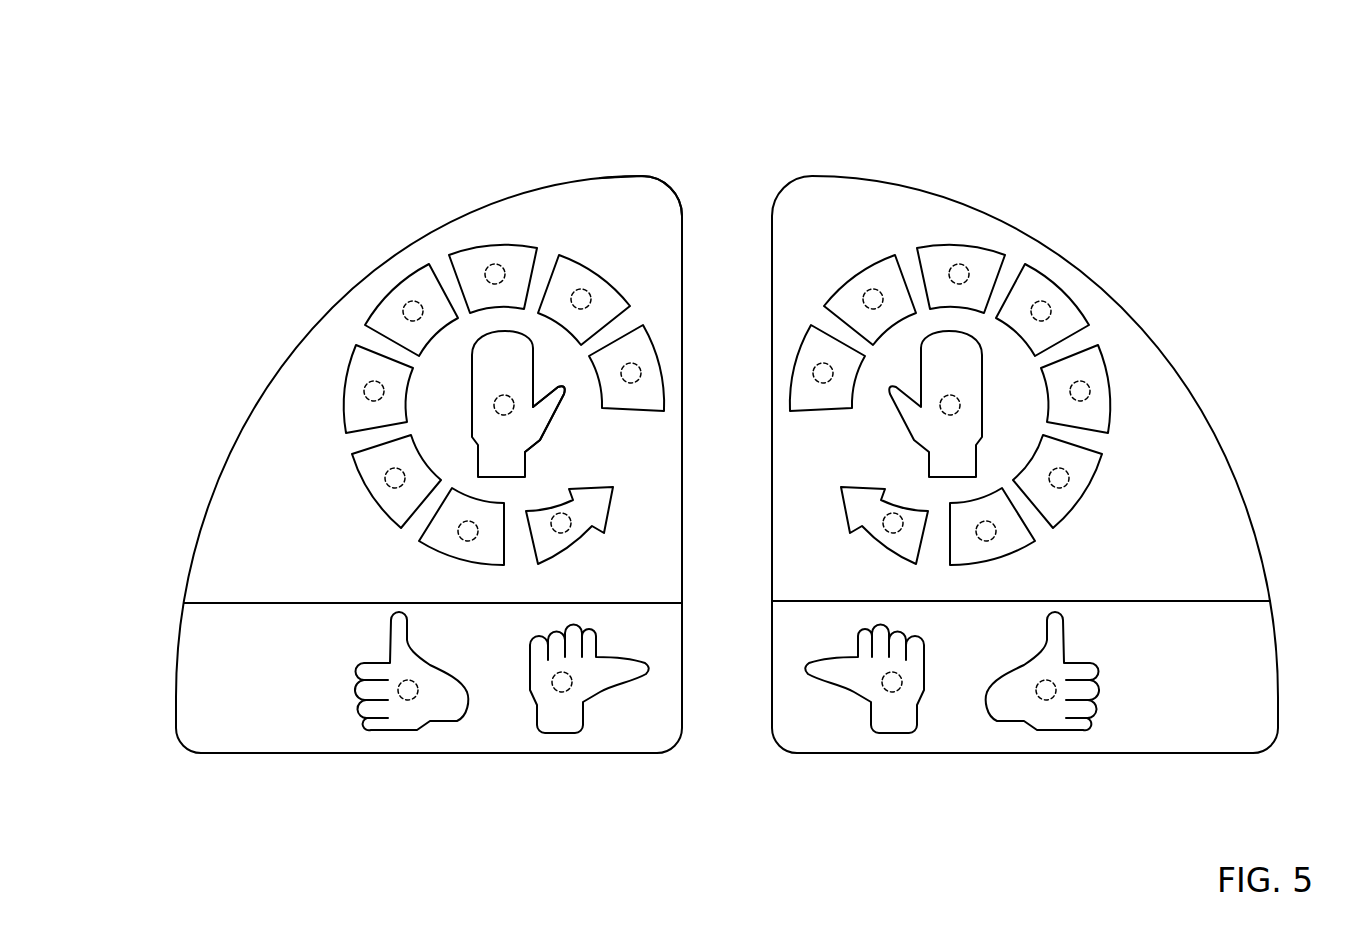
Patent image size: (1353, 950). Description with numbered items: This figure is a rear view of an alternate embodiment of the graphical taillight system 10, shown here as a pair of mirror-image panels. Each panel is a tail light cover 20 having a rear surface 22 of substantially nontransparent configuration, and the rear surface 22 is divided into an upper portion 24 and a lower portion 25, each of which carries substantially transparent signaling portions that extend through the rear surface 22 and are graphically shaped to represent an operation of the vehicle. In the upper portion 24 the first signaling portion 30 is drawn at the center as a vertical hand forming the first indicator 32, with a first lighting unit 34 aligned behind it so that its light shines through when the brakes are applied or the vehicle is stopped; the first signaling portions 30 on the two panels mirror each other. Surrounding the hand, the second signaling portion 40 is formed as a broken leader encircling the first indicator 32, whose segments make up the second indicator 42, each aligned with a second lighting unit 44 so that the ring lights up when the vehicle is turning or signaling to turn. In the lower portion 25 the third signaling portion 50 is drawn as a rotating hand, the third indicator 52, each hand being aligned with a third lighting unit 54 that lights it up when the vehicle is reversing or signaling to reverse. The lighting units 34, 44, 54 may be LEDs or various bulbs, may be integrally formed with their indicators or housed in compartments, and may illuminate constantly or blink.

The graphical taillight system 10 is at (268, 150).
The tail light cover 20 is at (530, 191).
The rear surface 22 is at (645, 205).
The upper portion 24 is at (672, 546).
The lower portion 25 is at (647, 622).
The first signaling portion 30 is at (820, 350).
The first indicator 32 is at (560, 412).
The first lighting unit 34 is at (512, 397).
The second signaling portion 40 is at (708, 364).
The second indicator 42 is at (483, 263).
The second lighting unit 44 is at (405, 300).
The third signaling portion 50 is at (712, 735).
The third indicator 52 is at (462, 716).
The third lighting unit 54 is at (408, 701).